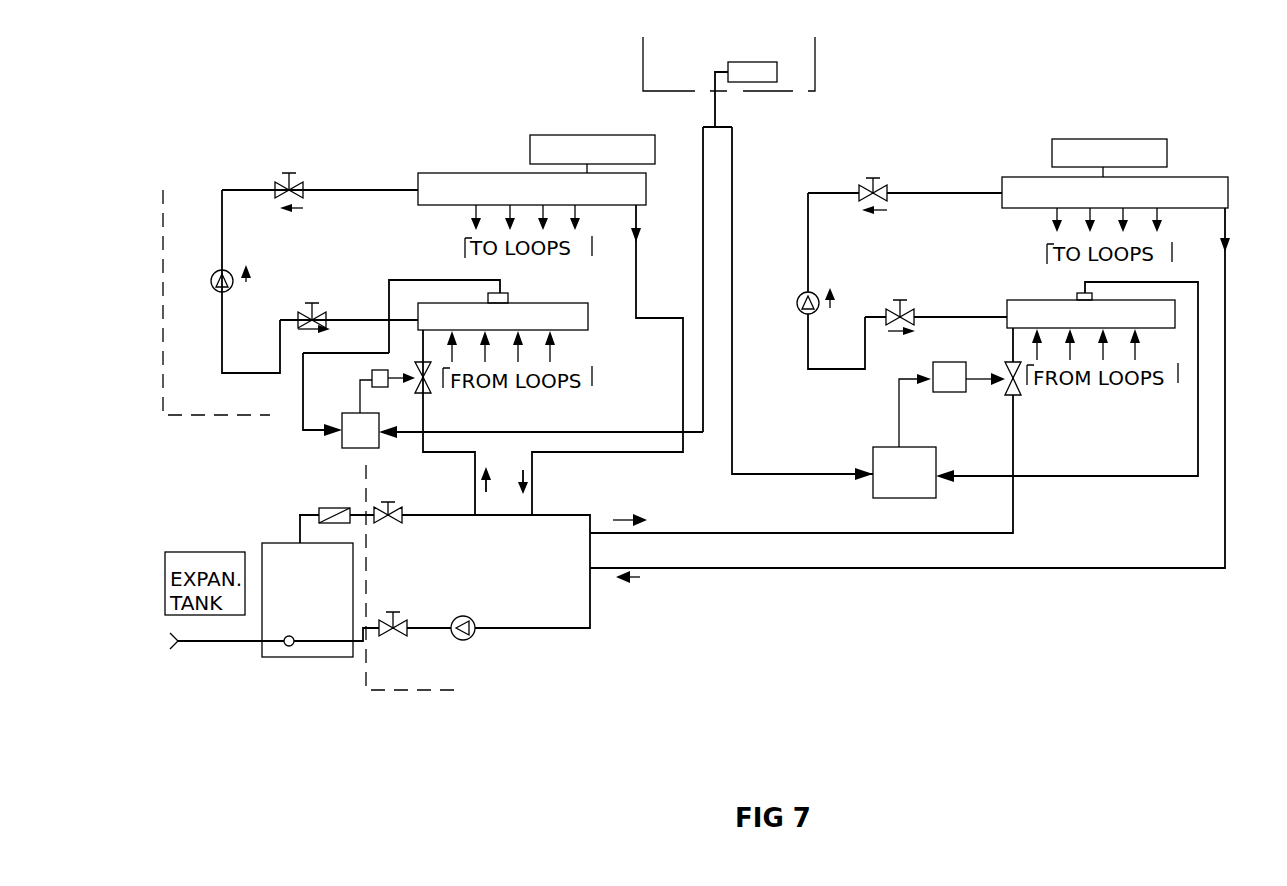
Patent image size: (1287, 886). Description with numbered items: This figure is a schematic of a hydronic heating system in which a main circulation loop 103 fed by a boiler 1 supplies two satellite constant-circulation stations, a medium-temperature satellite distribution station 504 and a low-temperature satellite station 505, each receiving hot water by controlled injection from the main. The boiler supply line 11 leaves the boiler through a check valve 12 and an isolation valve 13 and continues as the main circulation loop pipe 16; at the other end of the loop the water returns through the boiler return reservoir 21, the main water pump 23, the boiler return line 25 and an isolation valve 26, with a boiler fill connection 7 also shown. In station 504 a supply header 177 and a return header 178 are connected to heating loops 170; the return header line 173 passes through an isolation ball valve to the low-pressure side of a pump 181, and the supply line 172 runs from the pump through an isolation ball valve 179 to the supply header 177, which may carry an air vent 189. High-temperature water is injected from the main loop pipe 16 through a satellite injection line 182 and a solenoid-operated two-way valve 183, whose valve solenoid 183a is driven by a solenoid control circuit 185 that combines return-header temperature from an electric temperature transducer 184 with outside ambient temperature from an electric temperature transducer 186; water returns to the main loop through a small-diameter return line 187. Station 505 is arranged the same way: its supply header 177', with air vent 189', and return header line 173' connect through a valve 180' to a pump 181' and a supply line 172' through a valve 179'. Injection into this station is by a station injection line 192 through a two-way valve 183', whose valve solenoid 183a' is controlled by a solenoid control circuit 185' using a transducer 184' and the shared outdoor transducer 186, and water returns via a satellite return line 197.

The boiler 1 is at (290, 657).
The boiler fill line 7 is at (200, 645).
The boiler supply line 11 is at (299, 518).
The check valve 12 is at (330, 508).
The isolation valve 13 is at (385, 502).
The main circulation loop pipe 16 is at (438, 517).
The boiler return reservoir 21 is at (289, 636).
The main water pump 23 is at (462, 616).
The boiler return line 25 is at (358, 657).
The isolation valve 26 is at (389, 612).
The main circulation loop 103 is at (366, 690).
The loops 170 is at (626, 318).
The supply line 172 is at (295, 281).
The supply line 172' is at (872, 281).
The return header line 173 is at (349, 302).
The return header line 173' is at (936, 298).
The supply header 177 is at (532, 174).
The supply header 177' is at (1131, 179).
The return header 178 is at (587, 318).
The isolation ball valve 179 is at (264, 165).
The valve 179' is at (872, 165).
The valve 180' is at (900, 288).
The pump 181 is at (201, 300).
The pump 181' is at (786, 329).
The satellite injection line 182 is at (475, 466).
The two-way valve 183 is at (445, 422).
The two-way valve 183' is at (969, 381).
The valve solenoid 183a is at (352, 381).
The valve solenoid 183a' is at (944, 363).
The electric temperature transducer 184 is at (488, 312).
The electric temperature transducer 184' is at (1067, 382).
The solenoid control circuit 185 is at (464, 401).
The solenoid control circuit 185' is at (859, 451).
The electric temperature transducer 186 is at (777, 72).
The return line 187 is at (680, 455).
The air vent 189 is at (592, 134).
The air vent 189' is at (1109, 132).
The station injection line 192 is at (740, 533).
The satellite return line 197 is at (737, 568).
The satellite distribution station 504 is at (274, 91).
The satellite station 505 is at (1006, 115).